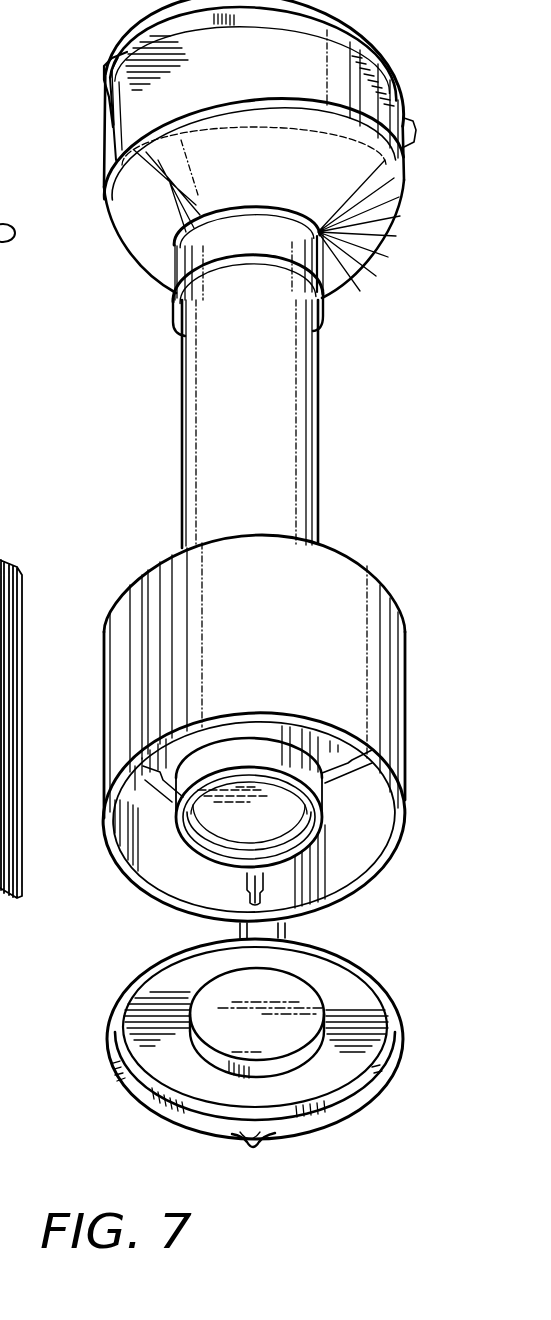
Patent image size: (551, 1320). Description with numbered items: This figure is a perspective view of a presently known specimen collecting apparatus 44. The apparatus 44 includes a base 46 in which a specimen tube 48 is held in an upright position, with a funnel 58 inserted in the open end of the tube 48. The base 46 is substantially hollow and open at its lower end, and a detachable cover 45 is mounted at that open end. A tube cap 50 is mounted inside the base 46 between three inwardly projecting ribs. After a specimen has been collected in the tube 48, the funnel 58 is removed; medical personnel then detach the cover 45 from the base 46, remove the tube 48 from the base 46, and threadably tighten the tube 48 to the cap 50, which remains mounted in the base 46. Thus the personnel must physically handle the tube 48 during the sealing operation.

The collecting apparatus 44 is at (162, 430).
The detachable cover 45 is at (105, 1045).
The base 46 is at (337, 583).
The specimen tube 48 is at (285, 425).
The tube cap 50 is at (297, 843).
The funnel 58 is at (103, 160).